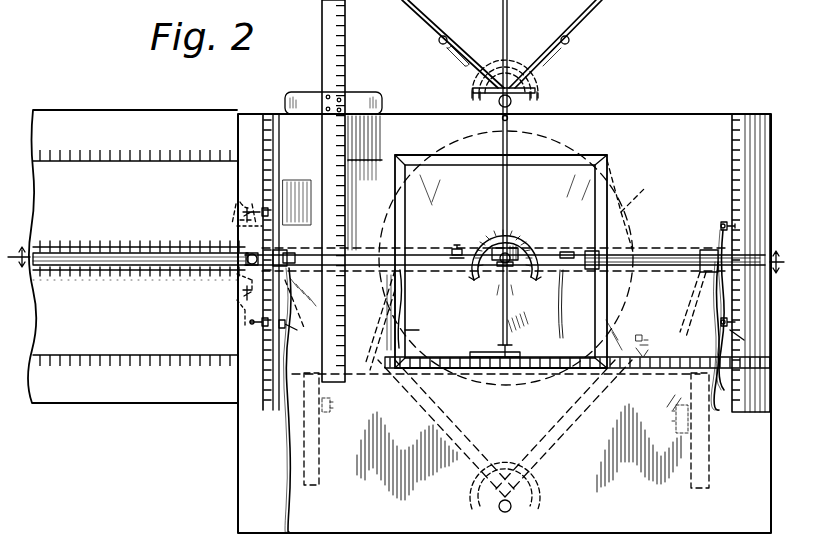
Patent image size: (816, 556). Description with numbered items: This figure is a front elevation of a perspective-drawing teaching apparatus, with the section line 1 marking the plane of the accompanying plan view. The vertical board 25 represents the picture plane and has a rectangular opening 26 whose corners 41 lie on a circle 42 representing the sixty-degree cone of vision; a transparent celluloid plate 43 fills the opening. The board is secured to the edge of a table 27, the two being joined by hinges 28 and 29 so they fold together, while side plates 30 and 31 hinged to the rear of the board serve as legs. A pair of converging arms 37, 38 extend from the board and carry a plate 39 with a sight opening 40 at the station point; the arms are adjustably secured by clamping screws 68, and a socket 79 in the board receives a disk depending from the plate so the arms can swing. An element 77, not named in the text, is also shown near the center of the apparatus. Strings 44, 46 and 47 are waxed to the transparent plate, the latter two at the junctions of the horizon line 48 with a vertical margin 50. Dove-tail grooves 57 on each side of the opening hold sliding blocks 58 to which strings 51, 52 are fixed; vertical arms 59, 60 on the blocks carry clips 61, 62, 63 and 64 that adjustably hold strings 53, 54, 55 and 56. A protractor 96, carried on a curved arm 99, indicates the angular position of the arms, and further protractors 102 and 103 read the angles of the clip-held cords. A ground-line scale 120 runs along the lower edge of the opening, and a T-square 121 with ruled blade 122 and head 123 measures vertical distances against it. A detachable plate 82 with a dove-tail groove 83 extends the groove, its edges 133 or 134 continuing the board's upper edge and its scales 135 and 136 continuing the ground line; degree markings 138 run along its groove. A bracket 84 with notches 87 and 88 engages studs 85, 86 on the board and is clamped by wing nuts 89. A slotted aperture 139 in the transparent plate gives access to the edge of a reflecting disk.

The section line 1 is at (398, 260).
The board 25 is at (506, 274).
The opening 26 is at (617, 308).
The table 27 is at (660, 395).
The hinge 28 is at (366, 348).
The hinge 29 is at (646, 338).
The side plate 30 is at (319, 460).
The side plate 31 is at (705, 468).
The arm 37 is at (440, 252).
The arm 38 is at (670, 262).
The plate 39 is at (531, 84).
The sight opening 40 is at (518, 248).
The corner 41 is at (405, 165).
The circle 42 is at (630, 186).
The transparent plate 43 is at (480, 301).
The string 44 is at (508, 328).
The string 46 is at (412, 310).
The string 47 is at (574, 332).
The horizontal line 48 is at (566, 253).
The vertical margin 50 is at (625, 232).
The string 51 is at (290, 326).
The string 52 is at (718, 271).
The string 53 is at (298, 203).
The string 54 is at (289, 425).
The string 55 is at (722, 236).
The string 56 is at (722, 405).
The dove-tail groove 57 is at (252, 280).
The block 58 is at (287, 253).
The vertical arm 59 is at (279, 182).
The vertical arm 60 is at (750, 412).
The clip 61 is at (268, 210).
The clip 62 is at (256, 326).
The clip 63 is at (724, 222).
The clip 64 is at (744, 340).
The clamping screw 68 is at (458, 247).
The pendulum rod 77 is at (507, 136).
The socket 79 is at (511, 510).
The plate 82 is at (135, 294).
The dove-tail groove 83 is at (172, 272).
The bracket 84 is at (236, 255).
The stud 85 is at (242, 300).
The stud 86 is at (240, 210).
The notch 87 is at (244, 326).
The notch 88 is at (252, 252).
The wing nut 89 is at (237, 226).
The protractor 96 is at (500, 252).
The curved arm 99 is at (365, 205).
The protractor 102 is at (476, 278).
The protractor 103 is at (536, 279).
The scale 120 is at (432, 368).
The T-square 121 is at (348, 80).
The blade 122 is at (350, 142).
The head 123 is at (382, 102).
The horizontal edge 133 is at (117, 110).
The horizontal edge 134 is at (148, 403).
The scale 135 is at (125, 358).
The scale 136 is at (142, 160).
The degree markings 138 is at (98, 244).
The slotted aperture 139 is at (497, 368).